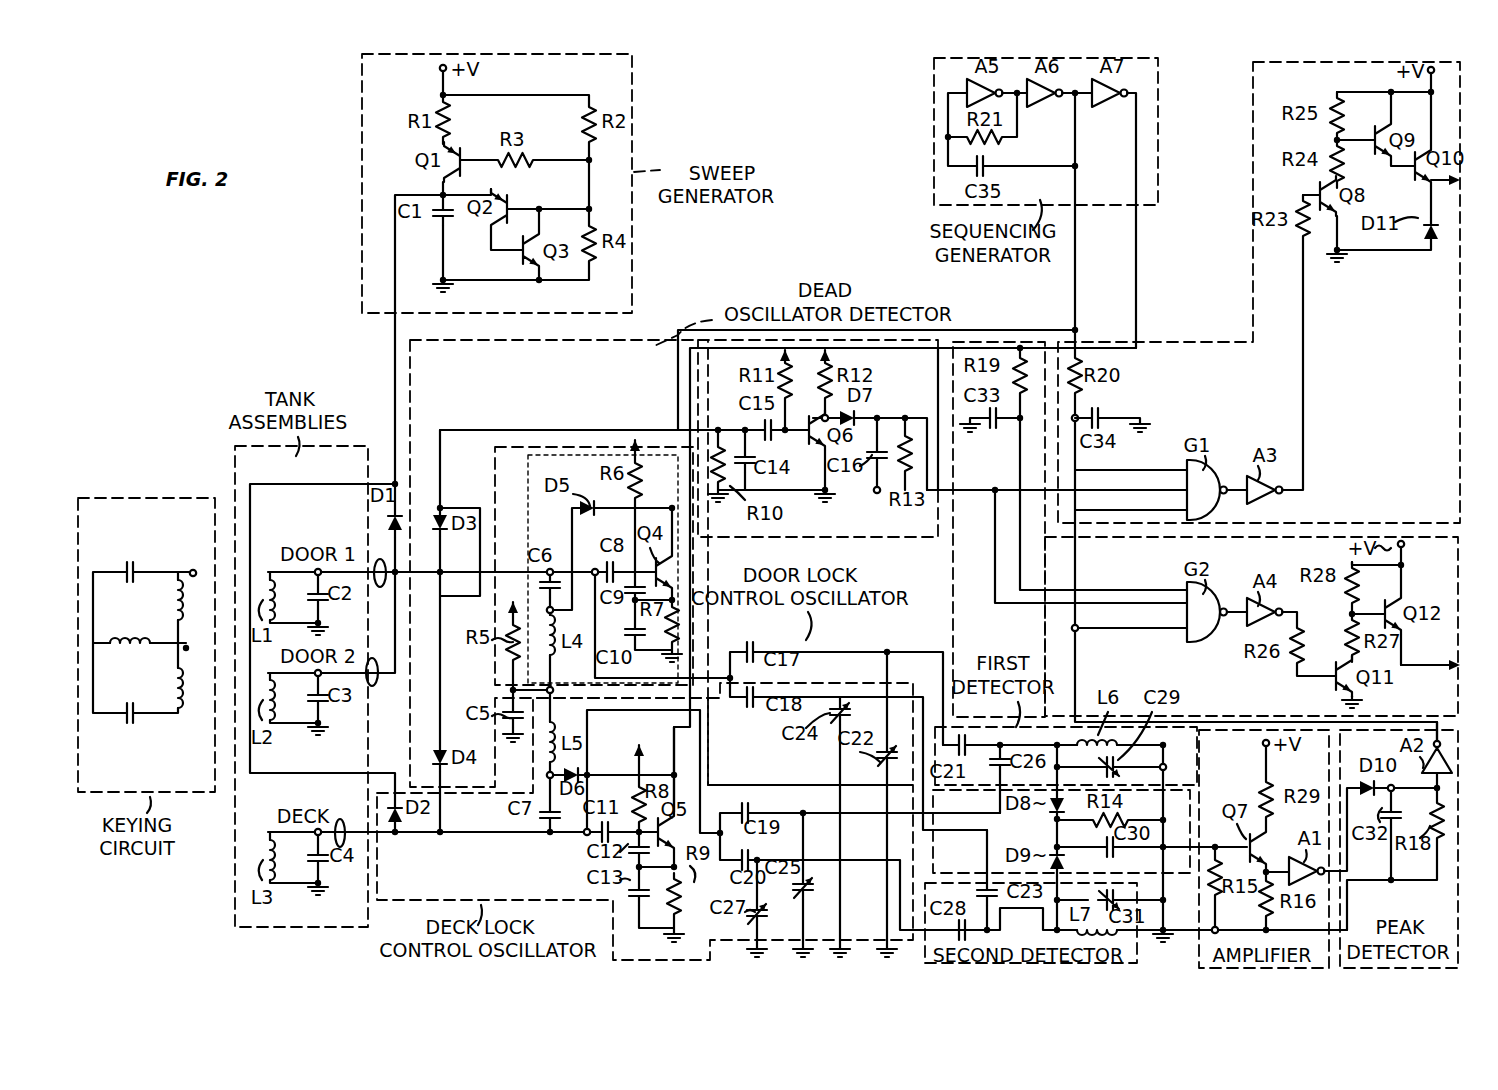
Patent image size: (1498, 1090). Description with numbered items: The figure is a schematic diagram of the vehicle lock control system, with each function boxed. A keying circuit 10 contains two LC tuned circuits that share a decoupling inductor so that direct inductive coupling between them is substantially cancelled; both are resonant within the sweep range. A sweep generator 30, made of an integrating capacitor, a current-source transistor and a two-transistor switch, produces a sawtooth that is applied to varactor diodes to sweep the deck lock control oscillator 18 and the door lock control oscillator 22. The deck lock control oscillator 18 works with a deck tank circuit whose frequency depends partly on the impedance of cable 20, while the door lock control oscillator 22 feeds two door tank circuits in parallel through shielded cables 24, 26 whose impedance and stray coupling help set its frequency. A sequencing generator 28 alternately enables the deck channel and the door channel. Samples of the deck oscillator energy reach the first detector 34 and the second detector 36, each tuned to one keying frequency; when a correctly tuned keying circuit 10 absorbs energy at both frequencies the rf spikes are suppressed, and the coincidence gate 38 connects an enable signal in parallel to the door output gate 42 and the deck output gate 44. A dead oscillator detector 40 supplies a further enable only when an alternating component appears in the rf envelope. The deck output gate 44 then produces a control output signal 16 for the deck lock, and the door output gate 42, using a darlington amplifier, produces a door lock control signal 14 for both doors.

The keying circuit 10 is at (170, 767).
The door lock control signal 14 is at (1448, 192).
The control output signal 16 is at (1425, 668).
The deck lock control oscillator 18 is at (478, 872).
The cable 20 is at (345, 822).
The door lock control oscillator 22 is at (738, 759).
The shielded cable 24 is at (380, 559).
The shielded cable 26 is at (378, 686).
The sequencing generator 28 is at (1091, 165).
The sweep generator 30 is at (410, 90).
The first detector 34 is at (1166, 763).
The second detector 36 is at (1008, 942).
The coincidence gate 38 is at (946, 867).
The dead oscillator detector 40 is at (533, 400).
The door output gate 42 is at (1373, 405).
The deck output gate 44 is at (1231, 697).